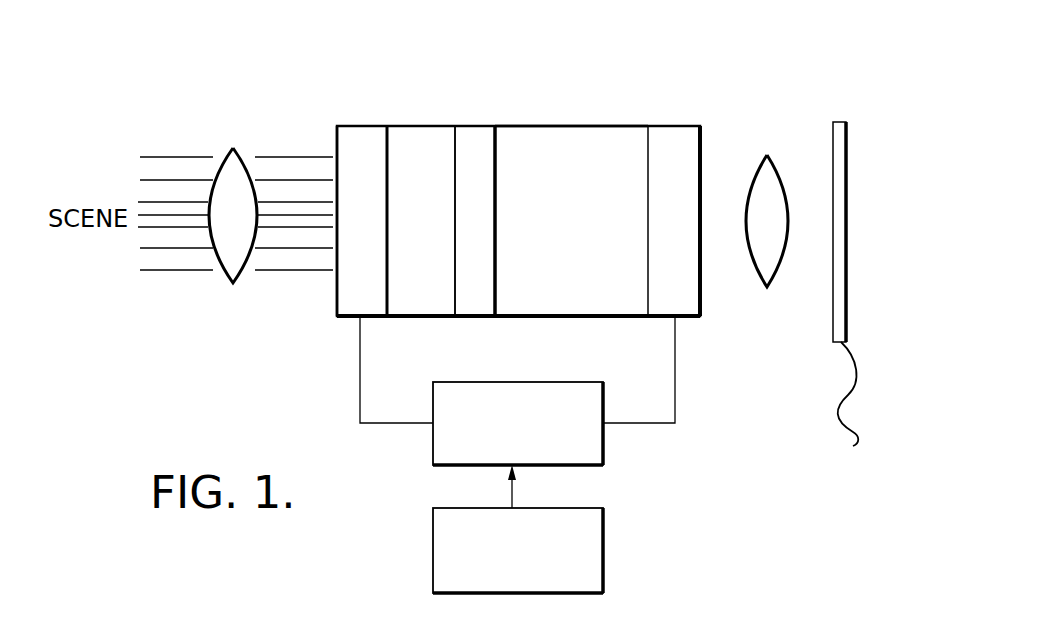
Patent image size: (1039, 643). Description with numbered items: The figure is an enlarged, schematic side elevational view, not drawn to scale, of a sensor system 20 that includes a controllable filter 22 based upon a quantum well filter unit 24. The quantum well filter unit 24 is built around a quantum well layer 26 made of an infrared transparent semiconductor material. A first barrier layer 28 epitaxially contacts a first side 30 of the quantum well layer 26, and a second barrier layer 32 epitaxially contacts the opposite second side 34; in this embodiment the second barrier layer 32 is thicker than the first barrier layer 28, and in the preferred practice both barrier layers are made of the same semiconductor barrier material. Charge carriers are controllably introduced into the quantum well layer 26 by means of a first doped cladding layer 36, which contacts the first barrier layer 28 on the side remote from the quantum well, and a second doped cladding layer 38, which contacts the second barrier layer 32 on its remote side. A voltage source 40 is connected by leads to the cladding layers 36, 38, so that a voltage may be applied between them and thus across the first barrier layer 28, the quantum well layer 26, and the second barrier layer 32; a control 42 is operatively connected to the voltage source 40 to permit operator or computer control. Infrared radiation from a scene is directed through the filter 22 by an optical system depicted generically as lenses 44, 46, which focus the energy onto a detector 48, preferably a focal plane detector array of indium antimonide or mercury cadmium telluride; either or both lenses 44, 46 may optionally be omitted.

The sensor system 20 is at (210, 65).
The controllable filter 22 is at (221, 370).
The quantum well filter unit 24 is at (350, 56).
The quantum well layer 26 is at (473, 126).
The first barrier layer 28 is at (387, 126).
The first side 30 is at (455, 160).
The second barrier layer 32 is at (605, 126).
The second side 34 is at (496, 177).
The first doped cladding layer 36 is at (337, 303).
The second doped cladding layer 38 is at (700, 290).
The voltage source 40 is at (605, 465).
The control 42 is at (605, 593).
The lens 44 is at (232, 285).
The lens 46 is at (768, 152).
The detector 48 is at (835, 121).